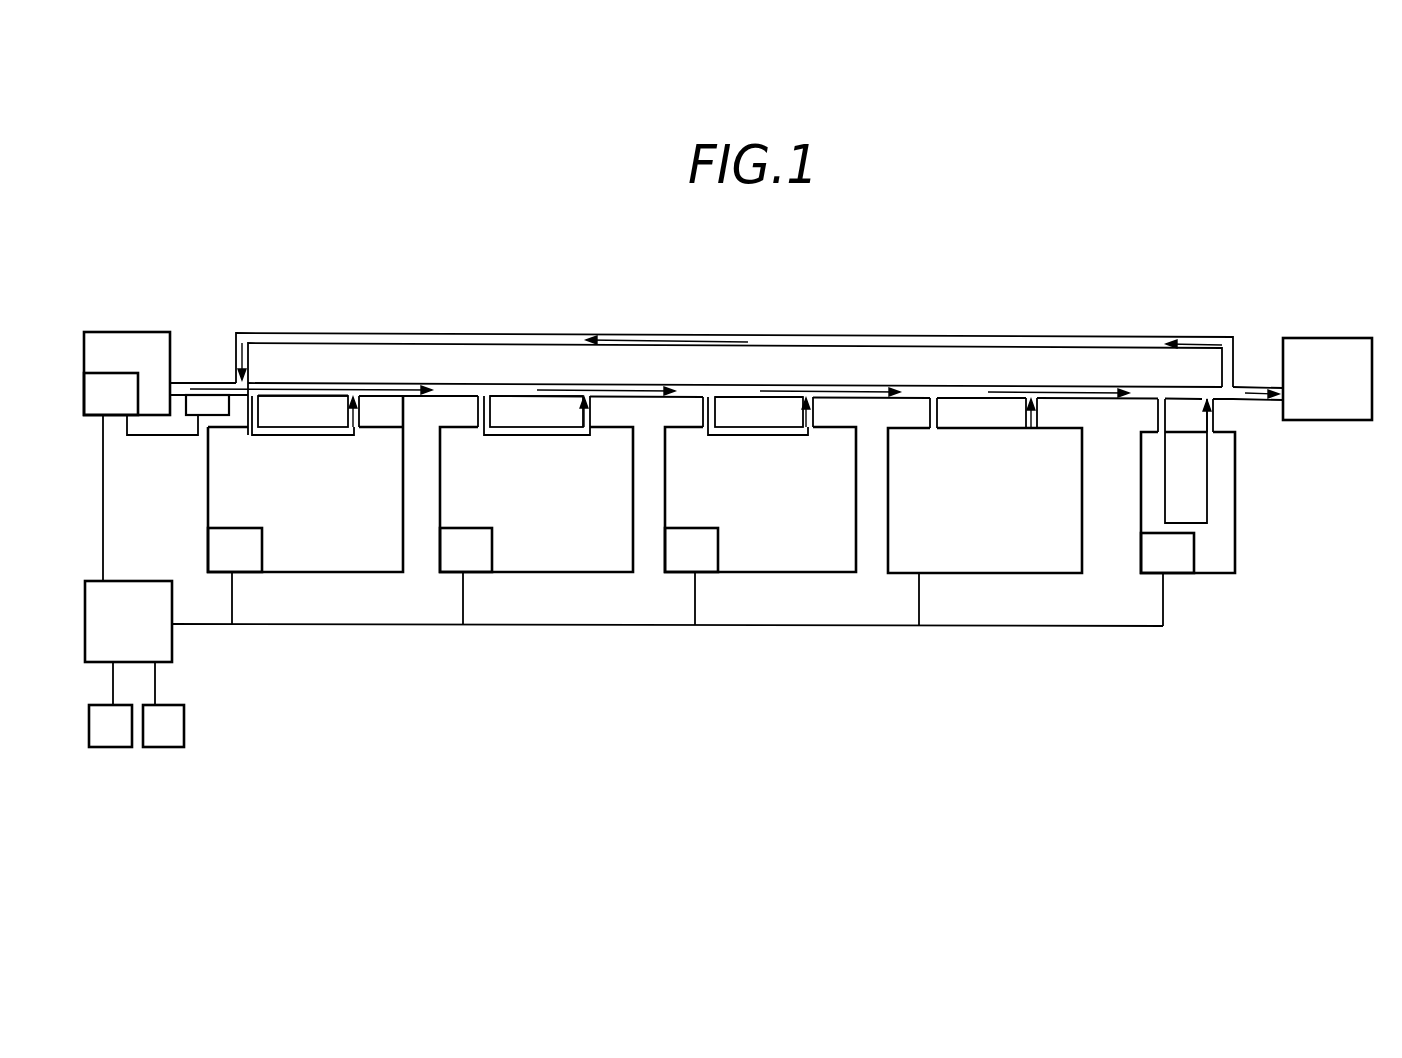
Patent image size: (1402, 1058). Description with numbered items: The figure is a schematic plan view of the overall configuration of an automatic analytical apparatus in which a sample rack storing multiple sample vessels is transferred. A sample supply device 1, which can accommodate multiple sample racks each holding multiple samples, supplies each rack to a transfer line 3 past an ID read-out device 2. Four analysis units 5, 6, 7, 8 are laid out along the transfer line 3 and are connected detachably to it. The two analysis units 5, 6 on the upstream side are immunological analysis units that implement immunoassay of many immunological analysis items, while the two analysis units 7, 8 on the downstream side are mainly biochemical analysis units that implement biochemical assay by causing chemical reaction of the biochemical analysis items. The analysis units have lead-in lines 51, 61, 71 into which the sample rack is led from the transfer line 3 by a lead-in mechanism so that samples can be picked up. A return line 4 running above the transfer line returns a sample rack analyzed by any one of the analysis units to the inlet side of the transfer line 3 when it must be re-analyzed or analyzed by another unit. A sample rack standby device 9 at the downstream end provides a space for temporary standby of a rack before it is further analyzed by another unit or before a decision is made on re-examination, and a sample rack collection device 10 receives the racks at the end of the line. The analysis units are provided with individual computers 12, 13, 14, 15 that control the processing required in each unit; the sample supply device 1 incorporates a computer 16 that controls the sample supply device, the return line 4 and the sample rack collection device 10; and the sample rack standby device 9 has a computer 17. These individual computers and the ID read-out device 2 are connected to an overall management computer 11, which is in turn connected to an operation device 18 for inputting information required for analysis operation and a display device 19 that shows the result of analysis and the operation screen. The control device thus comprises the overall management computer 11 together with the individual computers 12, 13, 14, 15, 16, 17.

The sample supply device 1 is at (160, 362).
The ID read-out device 2 is at (200, 404).
The transfer line 3 is at (468, 391).
The return line 4 is at (567, 335).
The analysis unit 5 is at (305, 539).
The analysis unit 6 is at (536, 551).
The analysis unit 7 is at (760, 551).
The analysis unit 8 is at (985, 553).
The sample rack standby device 9 is at (1201, 542).
The sample rack collection device 10 is at (1300, 350).
The overall management computer 11 is at (165, 650).
The individual computer 12 is at (246, 563).
The individual computer 13 is at (475, 562).
The individual computer 14 is at (702, 562).
The individual computer 15 is at (928, 575).
The computer 16 is at (105, 380).
The computer 17 is at (1172, 558).
The operation device 18 is at (102, 742).
The display device 19 is at (170, 742).
The lead-in line 51 is at (288, 437).
The lead-in line 61 is at (518, 437).
The lead-in line 71 is at (740, 437).